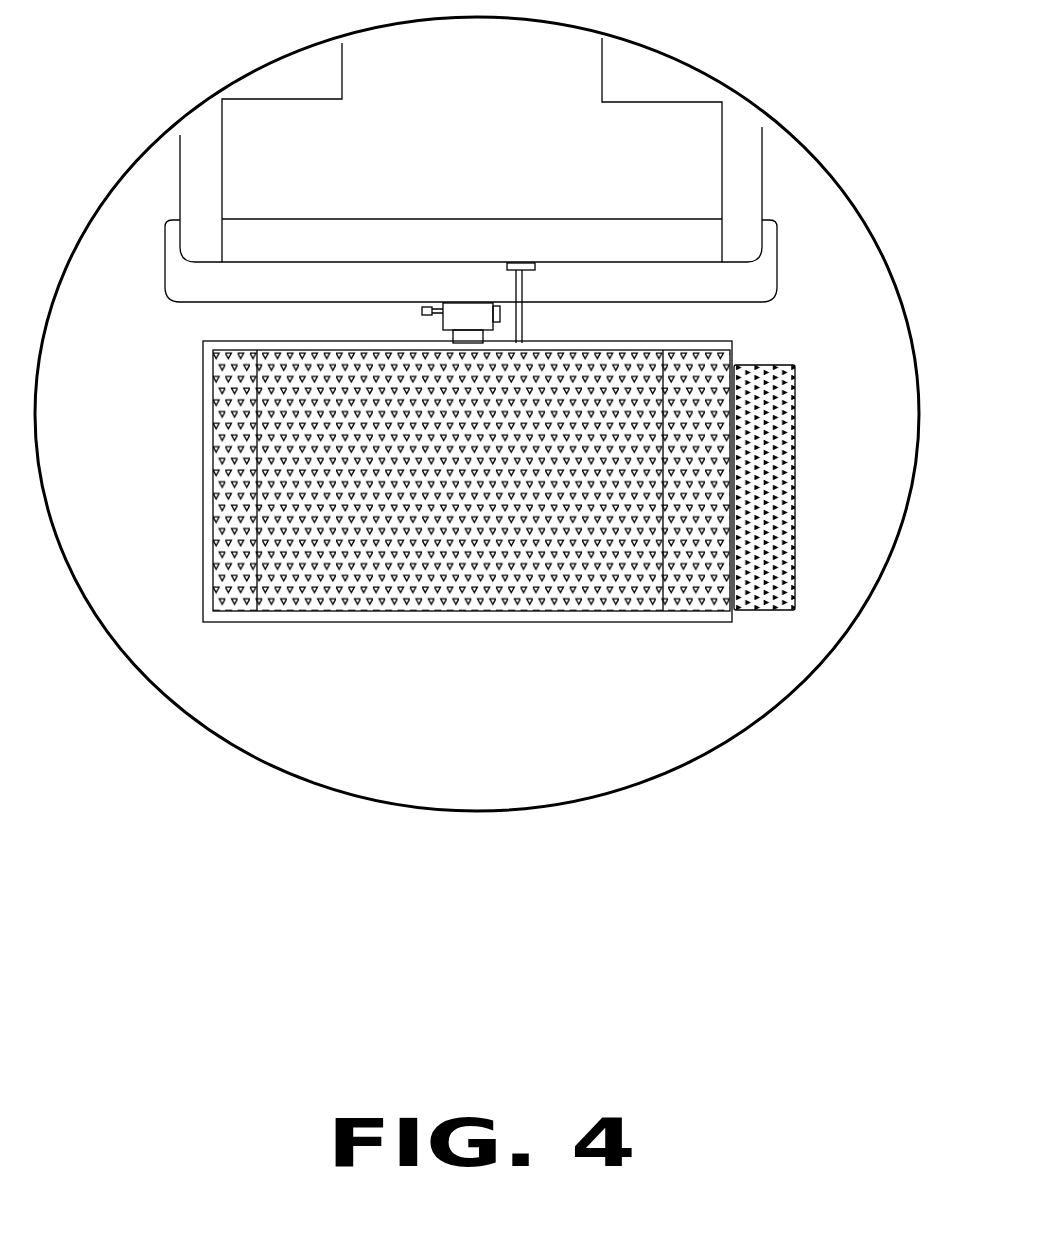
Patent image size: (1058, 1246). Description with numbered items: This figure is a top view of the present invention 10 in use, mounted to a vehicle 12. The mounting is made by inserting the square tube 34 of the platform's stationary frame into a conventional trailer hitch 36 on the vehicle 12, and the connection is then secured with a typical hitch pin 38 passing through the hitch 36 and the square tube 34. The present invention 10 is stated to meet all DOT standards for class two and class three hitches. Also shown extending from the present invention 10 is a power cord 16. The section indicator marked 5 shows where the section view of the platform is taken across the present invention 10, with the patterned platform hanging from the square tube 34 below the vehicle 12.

The present invention 10 is at (823, 308).
The vehicle 12 is at (732, 190).
The power cord 16 is at (521, 287).
The square tube 34 is at (463, 338).
The trailer hitch 36 is at (468, 313).
The hitch pin 38 is at (427, 305).
The section line 5- 5 is at (152, 481).